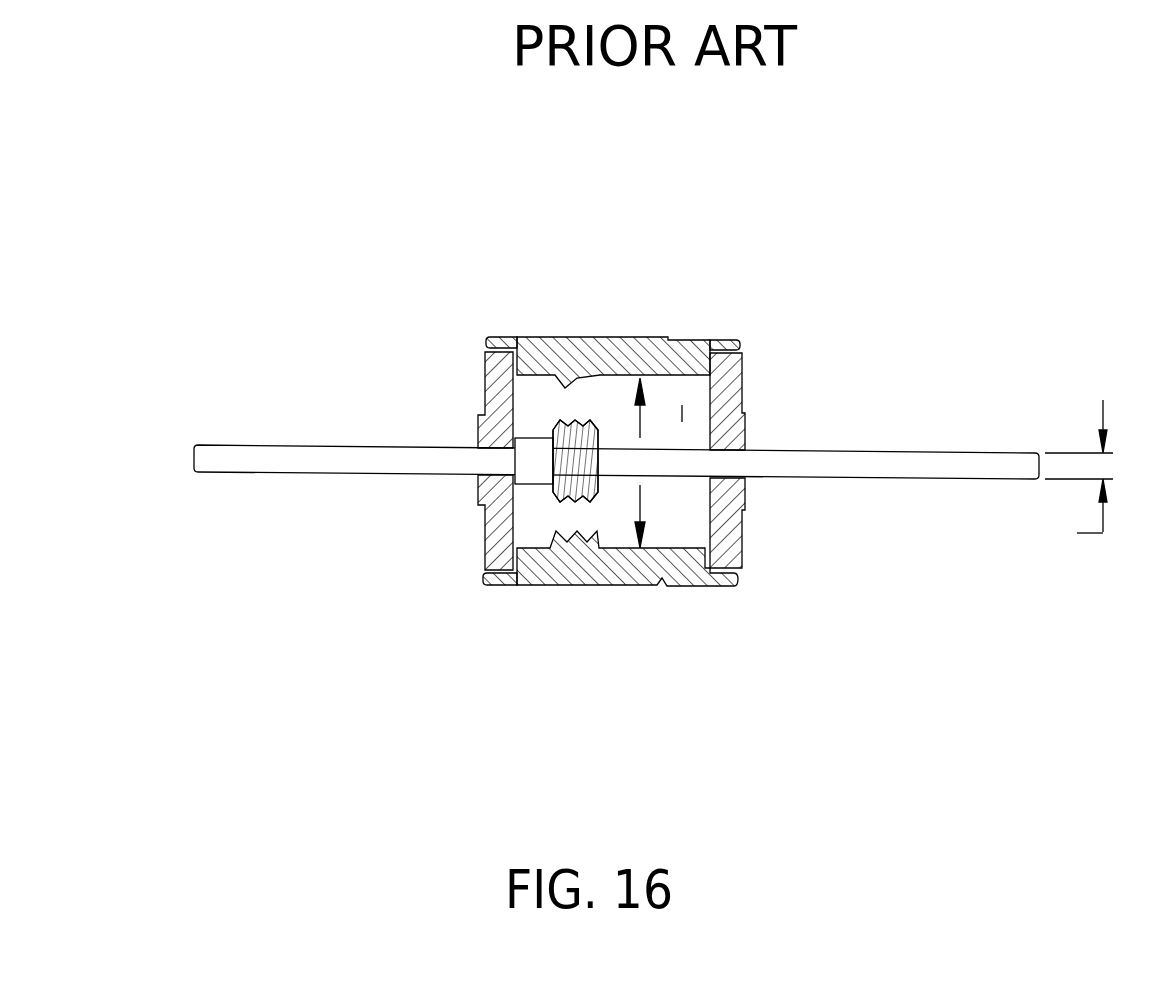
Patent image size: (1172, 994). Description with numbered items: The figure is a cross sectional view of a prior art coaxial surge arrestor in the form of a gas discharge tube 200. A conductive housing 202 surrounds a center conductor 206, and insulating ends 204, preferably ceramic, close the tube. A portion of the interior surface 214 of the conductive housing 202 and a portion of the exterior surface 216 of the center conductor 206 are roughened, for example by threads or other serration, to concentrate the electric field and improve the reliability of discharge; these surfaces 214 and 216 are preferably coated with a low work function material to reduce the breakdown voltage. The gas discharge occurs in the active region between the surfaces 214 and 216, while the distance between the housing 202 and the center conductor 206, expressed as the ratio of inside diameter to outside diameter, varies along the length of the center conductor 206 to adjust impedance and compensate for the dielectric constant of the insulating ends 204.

The gas discharge tube 200 is at (728, 276).
The conductive housing 202 is at (550, 338).
The insulating ends 204 is at (740, 398).
The center conductor 206 is at (288, 445).
The interior surface 214 is at (565, 387).
The exterior surface 216 is at (572, 428).